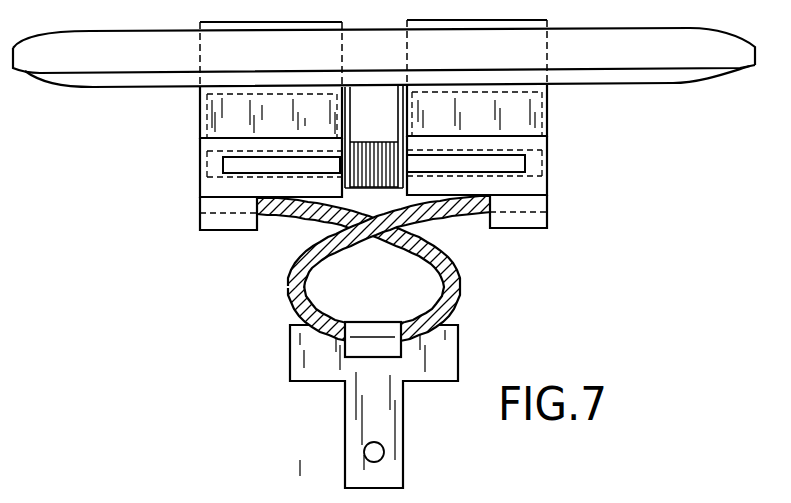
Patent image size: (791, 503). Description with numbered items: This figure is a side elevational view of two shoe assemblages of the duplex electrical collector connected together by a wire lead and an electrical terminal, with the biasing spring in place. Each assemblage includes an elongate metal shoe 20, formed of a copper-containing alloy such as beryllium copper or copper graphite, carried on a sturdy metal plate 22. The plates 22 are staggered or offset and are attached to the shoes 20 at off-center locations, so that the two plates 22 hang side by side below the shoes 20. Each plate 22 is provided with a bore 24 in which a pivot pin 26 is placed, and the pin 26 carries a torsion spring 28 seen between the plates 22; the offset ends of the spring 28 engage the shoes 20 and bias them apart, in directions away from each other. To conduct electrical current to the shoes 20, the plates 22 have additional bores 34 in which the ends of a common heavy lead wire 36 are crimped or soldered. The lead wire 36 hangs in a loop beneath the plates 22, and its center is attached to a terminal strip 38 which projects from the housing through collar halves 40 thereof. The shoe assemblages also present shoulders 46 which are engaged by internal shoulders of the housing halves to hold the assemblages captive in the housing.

The metal shoes 20 is at (732, 55).
The metal plates 22 is at (535, 115).
The bores 24 is at (204, 169).
The pivot pin 26 is at (533, 165).
The torsion spring 28 is at (373, 158).
The additional bores 34 is at (527, 202).
The lead wire 36 is at (298, 289).
The terminal strip 38 is at (352, 473).
The collar halves 40 is at (440, 412).
The shoulders 46 is at (527, 247).